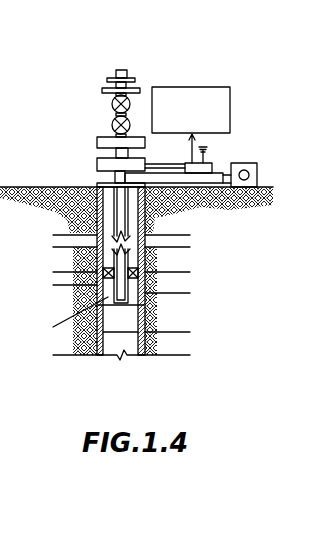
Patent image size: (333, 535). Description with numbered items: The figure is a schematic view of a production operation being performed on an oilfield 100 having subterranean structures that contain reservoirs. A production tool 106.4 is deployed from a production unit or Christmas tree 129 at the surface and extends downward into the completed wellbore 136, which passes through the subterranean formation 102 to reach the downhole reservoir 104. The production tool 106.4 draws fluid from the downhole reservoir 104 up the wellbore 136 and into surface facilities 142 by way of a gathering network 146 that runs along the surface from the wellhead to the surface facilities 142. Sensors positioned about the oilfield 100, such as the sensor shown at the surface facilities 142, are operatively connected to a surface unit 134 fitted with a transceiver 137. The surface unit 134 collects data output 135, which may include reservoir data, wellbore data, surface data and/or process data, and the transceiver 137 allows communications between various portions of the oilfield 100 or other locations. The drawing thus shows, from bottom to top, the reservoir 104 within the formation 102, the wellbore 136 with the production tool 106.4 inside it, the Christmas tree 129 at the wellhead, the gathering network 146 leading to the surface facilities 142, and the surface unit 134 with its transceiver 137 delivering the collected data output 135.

The oilfield 100 is at (58, 117).
The subterranean formation 102 is at (176, 262).
The reservoir 104 is at (197, 320).
The production tool 106.4 is at (75, 309).
The Christmas tree 129 is at (122, 70).
The surface unit 134 is at (185, 162).
The data output 135 is at (213, 87).
The wellbore 136 is at (135, 205).
The transceiver 137 is at (208, 153).
The surface facilities 142 is at (258, 168).
The gathering network 146 is at (222, 188).